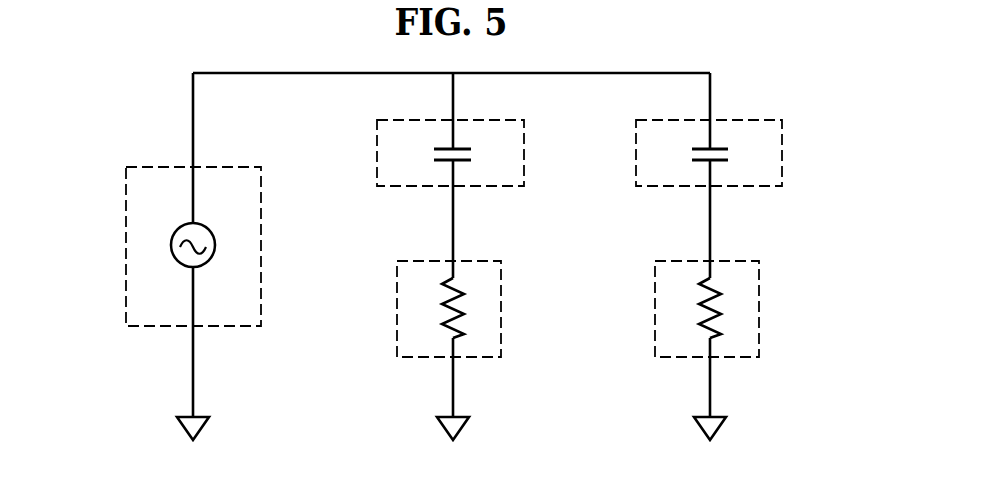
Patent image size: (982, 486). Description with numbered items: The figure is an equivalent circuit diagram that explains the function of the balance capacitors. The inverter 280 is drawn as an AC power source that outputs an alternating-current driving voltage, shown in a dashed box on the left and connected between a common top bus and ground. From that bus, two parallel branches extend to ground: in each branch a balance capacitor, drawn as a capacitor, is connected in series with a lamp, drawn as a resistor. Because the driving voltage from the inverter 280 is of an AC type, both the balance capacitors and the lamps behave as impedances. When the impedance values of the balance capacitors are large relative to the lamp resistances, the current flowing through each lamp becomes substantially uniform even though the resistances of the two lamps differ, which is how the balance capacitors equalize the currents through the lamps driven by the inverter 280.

The inverter 280 is at (126, 227).